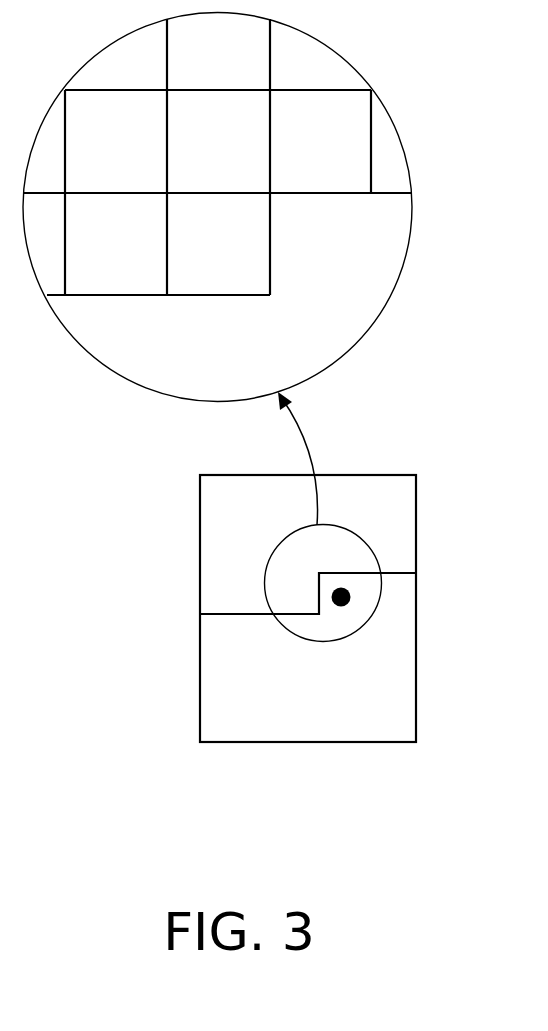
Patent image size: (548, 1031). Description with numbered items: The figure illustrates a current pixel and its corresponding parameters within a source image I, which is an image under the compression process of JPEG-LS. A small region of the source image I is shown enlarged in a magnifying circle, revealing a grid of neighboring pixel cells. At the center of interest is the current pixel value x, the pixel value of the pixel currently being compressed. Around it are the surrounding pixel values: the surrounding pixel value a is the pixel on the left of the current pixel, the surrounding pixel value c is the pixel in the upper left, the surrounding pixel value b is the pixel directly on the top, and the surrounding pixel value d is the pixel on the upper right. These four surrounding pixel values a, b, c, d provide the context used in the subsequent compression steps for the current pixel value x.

The source image I is at (416, 671).
The current pixel value x is at (218, 244).
The surrounding pixel value a is at (116, 244).
The surrounding pixel value b is at (218, 141).
The surrounding pixel value c is at (116, 141).
The surrounding pixel value d is at (320, 141).